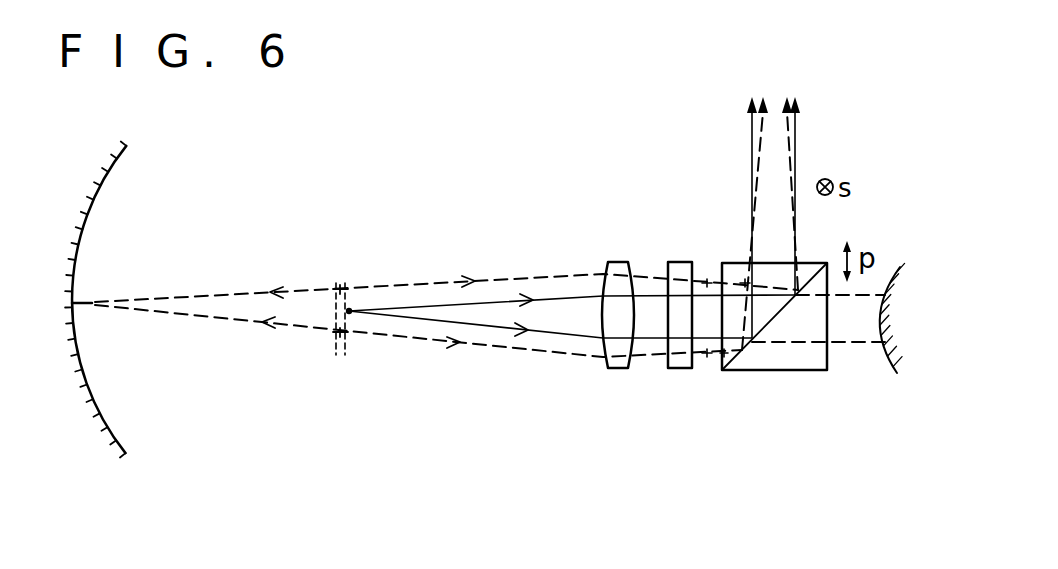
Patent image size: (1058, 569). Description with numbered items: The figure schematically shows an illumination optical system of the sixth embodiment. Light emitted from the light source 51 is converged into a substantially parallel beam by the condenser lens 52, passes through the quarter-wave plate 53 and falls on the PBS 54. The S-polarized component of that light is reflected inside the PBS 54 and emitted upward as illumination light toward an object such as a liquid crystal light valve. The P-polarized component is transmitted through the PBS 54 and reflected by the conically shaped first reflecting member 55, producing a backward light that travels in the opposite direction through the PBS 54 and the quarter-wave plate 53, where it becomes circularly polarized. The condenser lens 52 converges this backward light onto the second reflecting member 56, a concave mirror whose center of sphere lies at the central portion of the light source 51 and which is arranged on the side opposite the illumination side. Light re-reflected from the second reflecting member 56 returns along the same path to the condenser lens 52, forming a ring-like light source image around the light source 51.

The light source 51 is at (349, 312).
The condenser lens 52 is at (610, 370).
The quarter-wave plate 53 is at (680, 370).
The PBS 54 is at (760, 372).
The first reflecting member 55 is at (887, 366).
The second reflecting member 56 is at (98, 200).